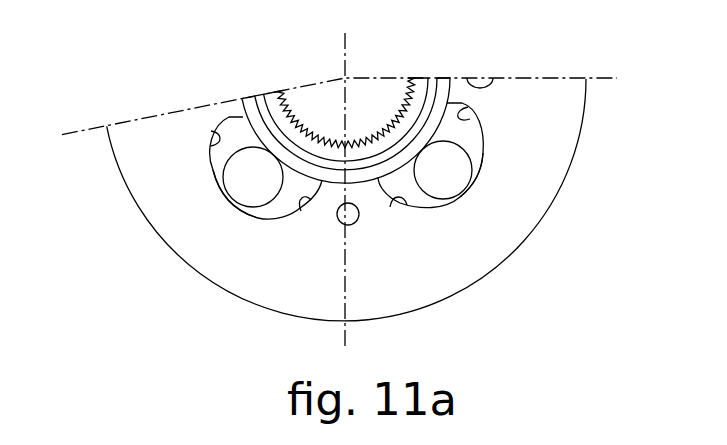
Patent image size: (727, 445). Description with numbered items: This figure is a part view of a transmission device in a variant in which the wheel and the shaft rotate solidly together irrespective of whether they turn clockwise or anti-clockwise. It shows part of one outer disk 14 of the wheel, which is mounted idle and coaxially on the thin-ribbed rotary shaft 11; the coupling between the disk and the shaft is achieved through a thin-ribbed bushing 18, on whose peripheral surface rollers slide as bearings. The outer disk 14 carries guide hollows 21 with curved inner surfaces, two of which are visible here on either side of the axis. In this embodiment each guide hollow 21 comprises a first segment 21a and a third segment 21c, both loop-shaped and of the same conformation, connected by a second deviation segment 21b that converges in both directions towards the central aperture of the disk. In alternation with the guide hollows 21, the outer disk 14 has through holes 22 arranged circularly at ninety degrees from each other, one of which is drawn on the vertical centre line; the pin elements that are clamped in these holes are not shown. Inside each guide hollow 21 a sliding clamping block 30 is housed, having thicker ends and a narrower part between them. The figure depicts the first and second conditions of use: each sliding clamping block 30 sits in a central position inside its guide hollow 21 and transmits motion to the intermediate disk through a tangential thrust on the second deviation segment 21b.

The rotary shaft 11 is at (302, 97).
The outer disk 14 is at (133, 177).
The thin-ribbed bushing 18 is at (421, 87).
The guide hollow 21 is at (231, 115).
The first loop-shaped segment 21a is at (211, 141).
The second deviation segment 21b is at (220, 184).
The third loop-shaped segment 21c is at (303, 210).
The through hole 22 is at (358, 225).
The sliding clamping block 30 is at (237, 211).